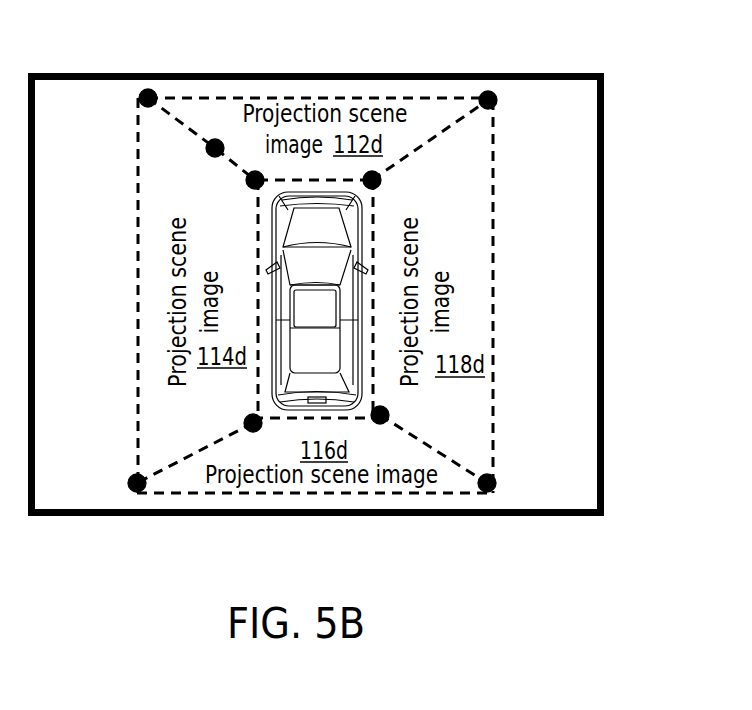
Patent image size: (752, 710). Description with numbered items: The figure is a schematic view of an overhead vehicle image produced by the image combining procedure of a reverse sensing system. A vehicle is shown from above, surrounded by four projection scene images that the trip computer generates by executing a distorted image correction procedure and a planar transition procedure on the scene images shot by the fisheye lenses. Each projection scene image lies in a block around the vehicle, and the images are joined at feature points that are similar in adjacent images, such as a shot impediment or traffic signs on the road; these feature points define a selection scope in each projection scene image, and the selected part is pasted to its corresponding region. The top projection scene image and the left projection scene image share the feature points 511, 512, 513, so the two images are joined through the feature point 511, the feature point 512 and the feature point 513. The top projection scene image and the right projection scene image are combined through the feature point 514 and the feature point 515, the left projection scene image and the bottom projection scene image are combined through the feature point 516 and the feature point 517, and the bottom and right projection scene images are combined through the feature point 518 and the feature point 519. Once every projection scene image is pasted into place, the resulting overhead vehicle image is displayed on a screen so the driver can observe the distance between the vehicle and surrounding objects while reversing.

The feature point 511 is at (147, 90).
The feature point 512 is at (215, 140).
The feature point 513 is at (247, 181).
The feature point 514 is at (488, 92).
The feature point 515 is at (381, 179).
The feature point 516 is at (130, 481).
The feature point 517 is at (245, 428).
The feature point 518 is at (386, 422).
The feature point 519 is at (497, 483).